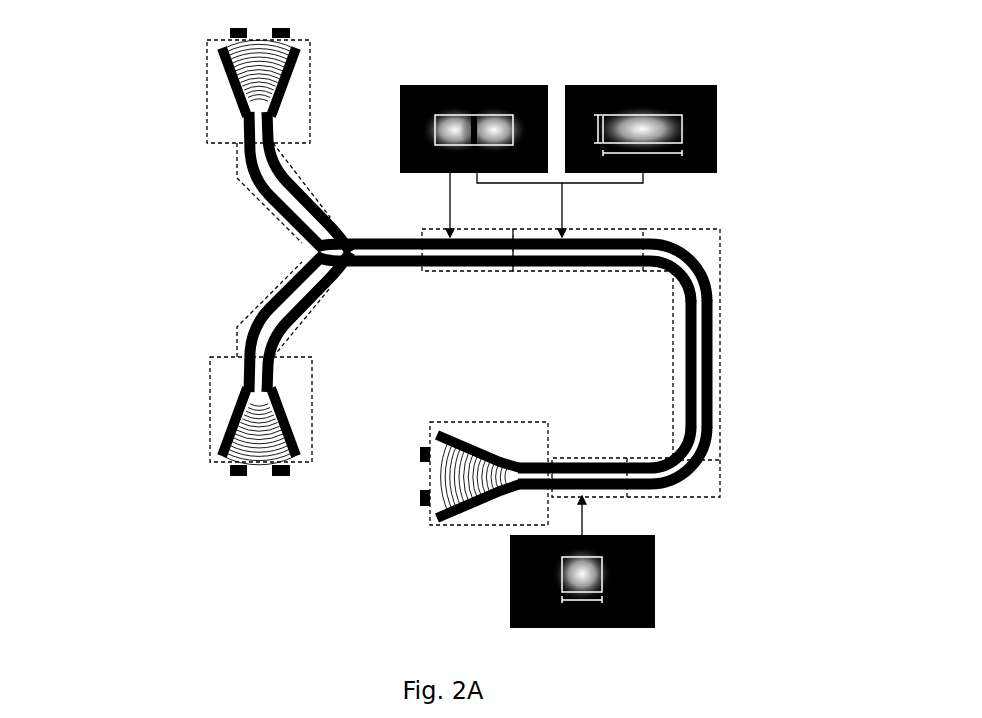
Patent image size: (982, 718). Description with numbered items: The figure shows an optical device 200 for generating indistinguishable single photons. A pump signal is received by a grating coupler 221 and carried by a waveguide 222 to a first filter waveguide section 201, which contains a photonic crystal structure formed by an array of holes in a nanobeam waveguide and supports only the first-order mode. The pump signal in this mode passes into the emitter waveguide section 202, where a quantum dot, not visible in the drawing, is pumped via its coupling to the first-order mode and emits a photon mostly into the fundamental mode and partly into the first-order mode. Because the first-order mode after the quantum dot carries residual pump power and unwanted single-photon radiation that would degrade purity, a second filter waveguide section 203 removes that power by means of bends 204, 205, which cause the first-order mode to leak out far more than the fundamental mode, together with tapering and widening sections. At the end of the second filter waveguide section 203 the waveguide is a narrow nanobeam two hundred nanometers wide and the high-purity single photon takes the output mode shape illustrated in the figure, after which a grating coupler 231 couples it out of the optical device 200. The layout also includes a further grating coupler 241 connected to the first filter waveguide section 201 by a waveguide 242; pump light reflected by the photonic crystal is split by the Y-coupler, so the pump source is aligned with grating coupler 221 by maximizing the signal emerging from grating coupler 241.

The optical device 200 is at (88, 35).
The grating coupler 221 is at (208, 95).
The waveguide 222 is at (262, 203).
The waveguide 242 is at (264, 297).
The further grating coupler 241 is at (258, 478).
The first filter waveguide section 201 is at (503, 275).
The emitter waveguide section 202 is at (603, 271).
The bend 204 is at (703, 255).
The second filter waveguide section 203 is at (720, 272).
The bend 205 is at (705, 468).
The grating coupler 231 is at (455, 528).